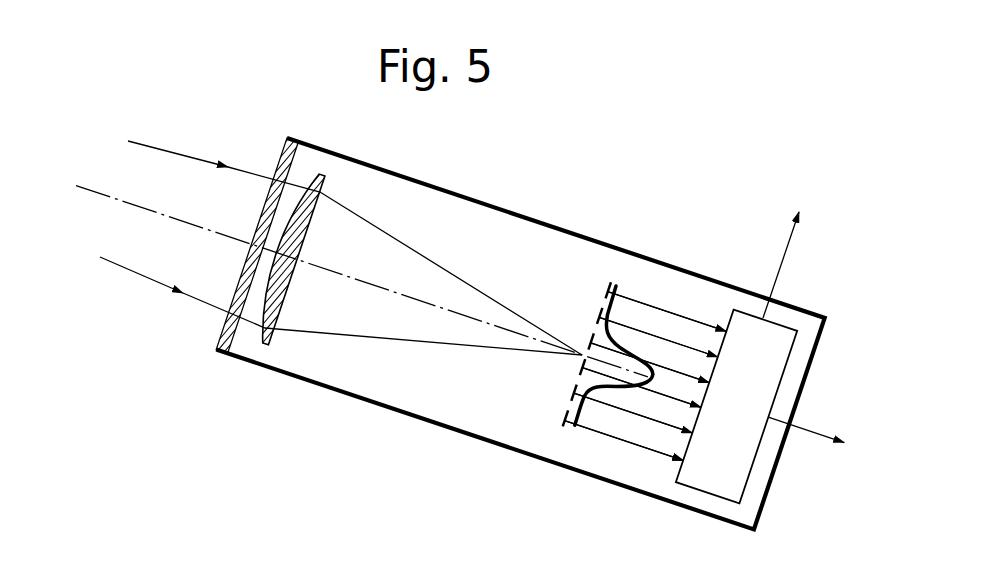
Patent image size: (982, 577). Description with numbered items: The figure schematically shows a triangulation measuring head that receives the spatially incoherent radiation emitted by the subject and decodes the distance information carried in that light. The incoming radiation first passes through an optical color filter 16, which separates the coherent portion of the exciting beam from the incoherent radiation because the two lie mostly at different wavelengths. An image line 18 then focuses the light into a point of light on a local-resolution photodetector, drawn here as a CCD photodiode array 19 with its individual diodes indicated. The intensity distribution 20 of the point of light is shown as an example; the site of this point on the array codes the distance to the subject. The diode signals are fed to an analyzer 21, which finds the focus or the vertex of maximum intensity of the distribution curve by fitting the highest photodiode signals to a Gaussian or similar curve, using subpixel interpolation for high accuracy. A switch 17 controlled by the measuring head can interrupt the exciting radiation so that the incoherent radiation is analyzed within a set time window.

The optical color filter 16 is at (218, 339).
The switch 17 is at (787, 250).
The image line 18 is at (265, 339).
The CCD photodiode array 19 is at (601, 313).
The intensity distribution 20 is at (604, 392).
The analyzer 21 is at (722, 480).